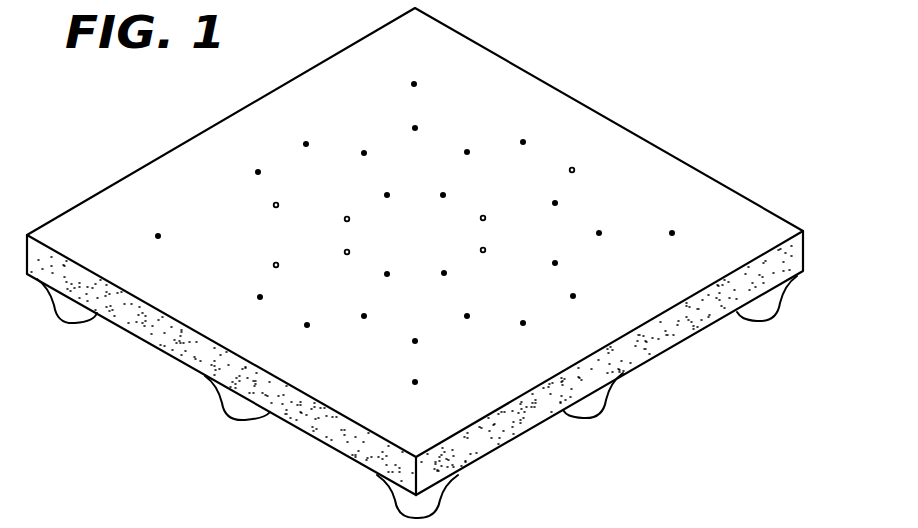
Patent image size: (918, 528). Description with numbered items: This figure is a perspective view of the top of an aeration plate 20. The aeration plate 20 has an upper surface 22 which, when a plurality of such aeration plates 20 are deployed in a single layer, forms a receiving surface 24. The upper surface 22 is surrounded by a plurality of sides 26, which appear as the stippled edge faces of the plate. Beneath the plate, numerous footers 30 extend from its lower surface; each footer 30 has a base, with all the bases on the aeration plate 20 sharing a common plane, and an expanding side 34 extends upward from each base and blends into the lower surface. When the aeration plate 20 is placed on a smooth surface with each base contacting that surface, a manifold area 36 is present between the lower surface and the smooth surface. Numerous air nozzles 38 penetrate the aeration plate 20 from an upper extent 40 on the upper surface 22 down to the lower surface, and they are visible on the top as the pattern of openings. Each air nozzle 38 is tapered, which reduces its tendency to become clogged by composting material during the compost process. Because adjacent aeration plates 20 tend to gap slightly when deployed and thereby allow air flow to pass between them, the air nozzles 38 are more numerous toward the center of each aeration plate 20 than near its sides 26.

The aeration plate 20 is at (670, 82).
The upper surface 22 is at (652, 181).
The receiving surface 24 is at (473, 78).
The sides 26 is at (671, 329).
The footers 30 is at (610, 395).
The expanding side 34 is at (438, 492).
The manifold area 36 is at (325, 449).
The air nozzles 38 is at (233, 236).
The upper extent 40 is at (233, 236).